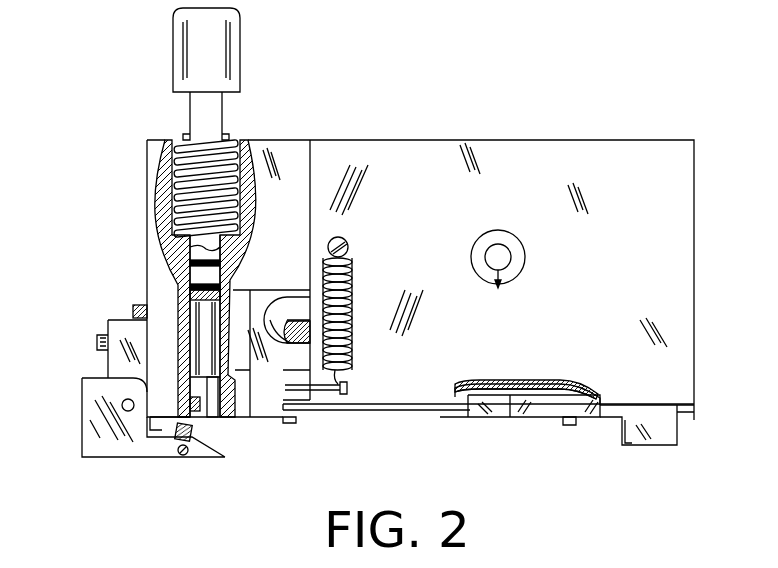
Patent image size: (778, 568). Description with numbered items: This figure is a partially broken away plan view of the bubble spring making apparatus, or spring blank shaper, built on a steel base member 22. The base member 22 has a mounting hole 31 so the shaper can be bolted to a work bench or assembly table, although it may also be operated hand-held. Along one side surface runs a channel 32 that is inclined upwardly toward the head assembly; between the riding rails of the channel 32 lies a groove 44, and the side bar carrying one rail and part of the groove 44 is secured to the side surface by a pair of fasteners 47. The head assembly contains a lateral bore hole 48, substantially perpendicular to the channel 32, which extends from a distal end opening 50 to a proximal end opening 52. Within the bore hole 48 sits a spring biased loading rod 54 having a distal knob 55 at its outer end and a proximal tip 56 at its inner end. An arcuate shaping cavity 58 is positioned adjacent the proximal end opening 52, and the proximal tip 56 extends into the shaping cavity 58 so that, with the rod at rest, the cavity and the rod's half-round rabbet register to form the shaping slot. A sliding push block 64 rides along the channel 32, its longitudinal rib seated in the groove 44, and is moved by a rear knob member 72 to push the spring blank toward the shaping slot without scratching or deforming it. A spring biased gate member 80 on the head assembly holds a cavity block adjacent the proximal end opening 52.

The base member 22 is at (658, 140).
The mounting hole 31 is at (500, 290).
The channel 32 is at (346, 418).
The groove 44 is at (400, 414).
The fasteners 47 is at (287, 424).
The bore hole 48 is at (255, 140).
The distal end opening 50 is at (170, 134).
The proximal end opening 52 is at (176, 438).
The loading rod 54 is at (224, 104).
The distal knob 55 is at (242, 52).
The proximal tip 56 is at (163, 424).
The shaping cavity 58 is at (185, 395).
The push block 64 is at (527, 418).
The rear knob member 72 is at (656, 446).
The gate member 80 is at (86, 452).